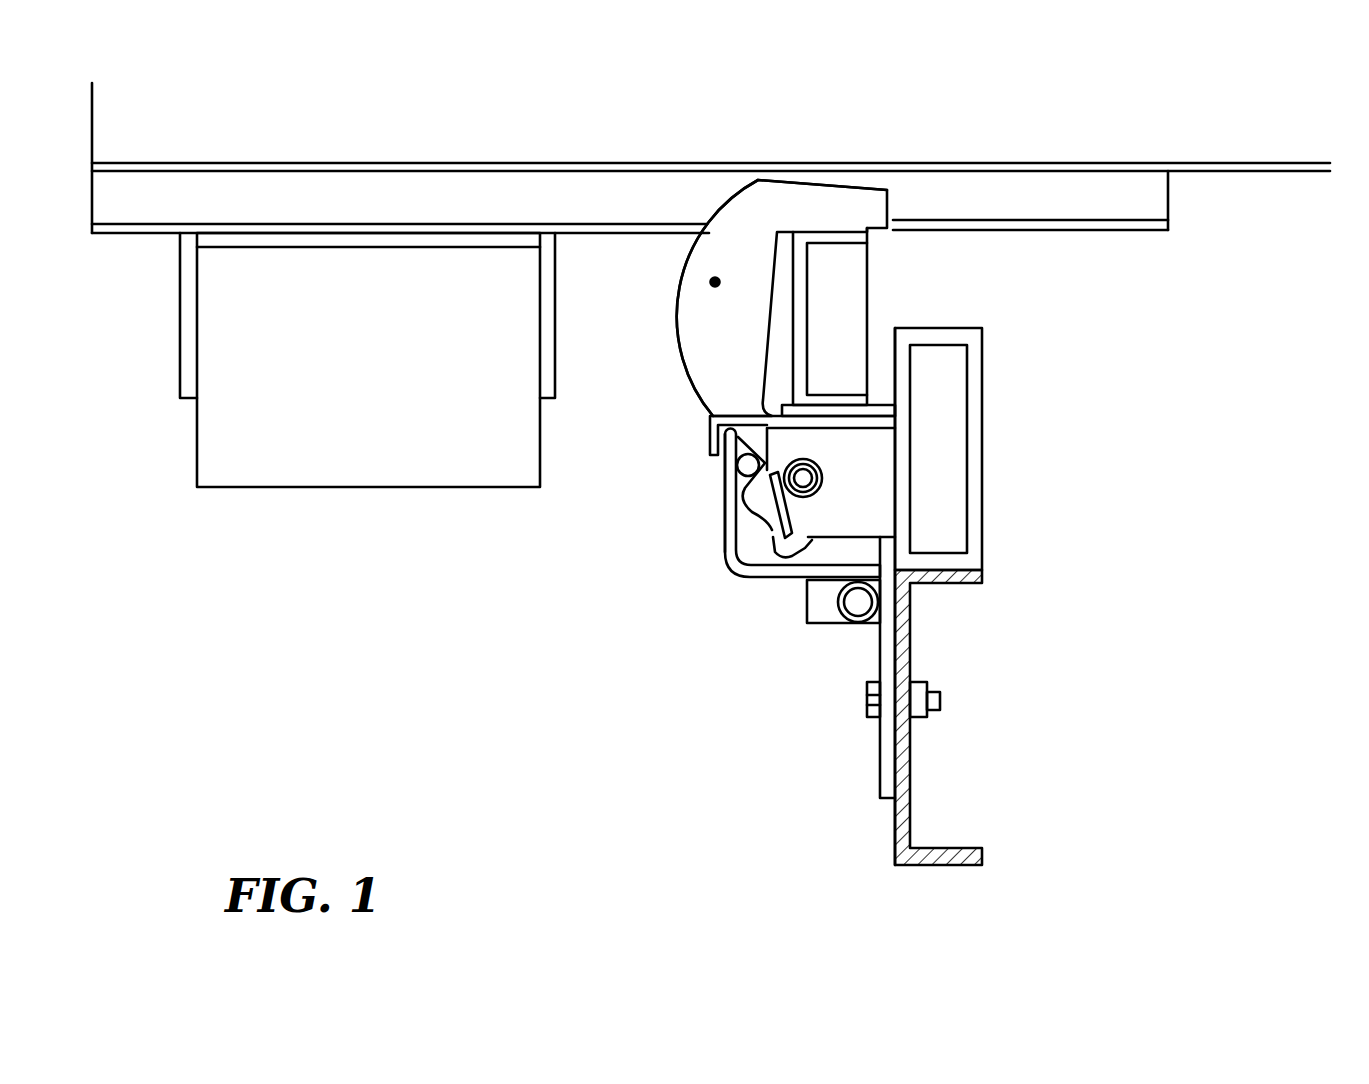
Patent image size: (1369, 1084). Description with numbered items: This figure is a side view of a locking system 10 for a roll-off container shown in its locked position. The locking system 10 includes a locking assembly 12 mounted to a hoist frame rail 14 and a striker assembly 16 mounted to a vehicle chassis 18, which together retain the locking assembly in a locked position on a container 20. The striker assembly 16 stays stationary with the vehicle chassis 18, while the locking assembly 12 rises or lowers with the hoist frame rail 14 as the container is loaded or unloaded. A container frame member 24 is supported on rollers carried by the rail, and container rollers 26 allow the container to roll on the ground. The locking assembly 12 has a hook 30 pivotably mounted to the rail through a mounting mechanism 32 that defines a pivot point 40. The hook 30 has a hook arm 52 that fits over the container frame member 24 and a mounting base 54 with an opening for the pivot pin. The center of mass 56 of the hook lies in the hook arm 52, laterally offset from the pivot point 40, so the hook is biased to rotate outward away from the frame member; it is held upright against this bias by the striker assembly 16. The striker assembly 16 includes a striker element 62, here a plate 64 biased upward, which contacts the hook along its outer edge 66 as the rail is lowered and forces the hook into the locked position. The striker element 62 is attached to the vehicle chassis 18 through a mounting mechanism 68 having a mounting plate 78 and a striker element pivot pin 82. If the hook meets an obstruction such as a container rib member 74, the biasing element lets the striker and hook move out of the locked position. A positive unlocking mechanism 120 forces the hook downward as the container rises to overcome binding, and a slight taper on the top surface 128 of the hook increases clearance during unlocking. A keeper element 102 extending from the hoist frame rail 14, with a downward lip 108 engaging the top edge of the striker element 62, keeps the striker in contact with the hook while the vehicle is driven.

The locking system 10 is at (713, 728).
The locking assembly 12 is at (668, 365).
The hoist frame rail 14 is at (983, 363).
The striker assembly 16 is at (748, 625).
The vehicle chassis 18 is at (912, 636).
The container 20 is at (93, 107).
The container frame member 24 is at (807, 272).
The container rollers 26 is at (223, 450).
The hook 30 is at (688, 262).
The mounting mechanism 32 is at (875, 508).
The pivot point 40 is at (803, 478).
The hook arm 52 is at (737, 205).
The mounting base 54 is at (762, 502).
The center of mass 56 is at (715, 282).
The striker element 62 is at (736, 568).
The plate 64 is at (725, 500).
The outer edge 66 is at (708, 398).
The mounting mechanism 68 is at (812, 627).
The container rib member 74 is at (820, 163).
The mounting plate 78 is at (887, 780).
The striker element pivot pin 82 is at (855, 605).
The keeper element 102 is at (677, 442).
The downward lip 108 is at (709, 446).
The unlocking mechanism 120 is at (770, 456).
The top surface 128 is at (863, 188).